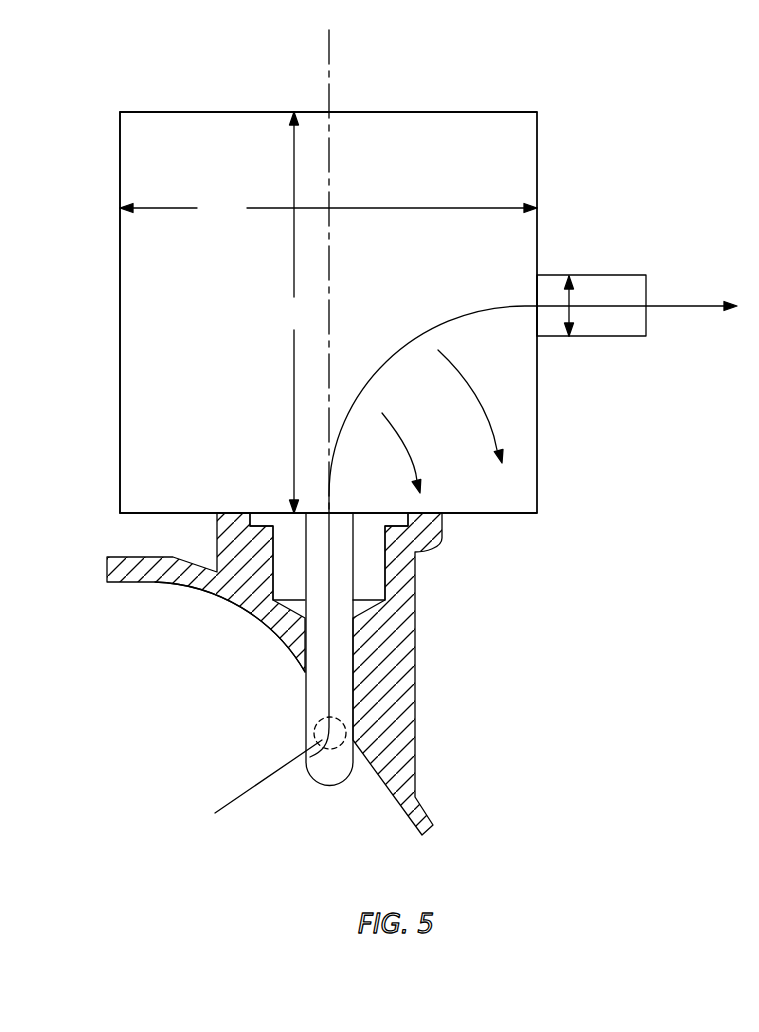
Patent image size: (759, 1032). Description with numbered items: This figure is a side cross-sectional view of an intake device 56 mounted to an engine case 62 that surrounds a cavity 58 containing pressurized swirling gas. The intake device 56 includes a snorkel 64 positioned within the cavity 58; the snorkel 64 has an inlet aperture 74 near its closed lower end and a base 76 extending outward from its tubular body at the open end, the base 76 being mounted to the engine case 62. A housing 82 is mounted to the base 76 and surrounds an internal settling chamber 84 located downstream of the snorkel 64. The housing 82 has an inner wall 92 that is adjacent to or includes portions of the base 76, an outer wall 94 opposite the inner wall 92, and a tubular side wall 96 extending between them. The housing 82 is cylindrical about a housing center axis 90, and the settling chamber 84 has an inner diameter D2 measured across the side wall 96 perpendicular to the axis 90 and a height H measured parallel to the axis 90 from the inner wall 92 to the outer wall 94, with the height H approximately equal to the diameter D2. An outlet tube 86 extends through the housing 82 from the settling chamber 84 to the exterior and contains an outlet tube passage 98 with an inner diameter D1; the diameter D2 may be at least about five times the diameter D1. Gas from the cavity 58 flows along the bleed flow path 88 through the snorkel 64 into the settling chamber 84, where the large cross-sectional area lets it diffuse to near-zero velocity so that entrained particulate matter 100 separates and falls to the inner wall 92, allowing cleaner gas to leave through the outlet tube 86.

The intake device 56 is at (617, 83).
The cavity 58 is at (118, 677).
The engine case 62 is at (398, 617).
The snorkel 64 is at (275, 699).
The inlet aperture 74 is at (332, 750).
The base 76 is at (417, 553).
The housing 82 is at (178, 104).
The settling chamber 84 is at (190, 341).
The outlet tube 86 is at (617, 275).
The bleed flow path 88 is at (706, 312).
The housing center axis 90 is at (329, 40).
The inner wall 92 is at (165, 515).
The outer wall 94 is at (254, 112).
The side wall 96 is at (120, 171).
The outlet tube passage 98 is at (624, 325).
The particulate matter 100 is at (485, 427).
The inner diameter of the outlet tube D1 is at (571, 316).
The inner diameter of the settling chamber D2 is at (328, 209).
The height of the settling chamber H is at (294, 312).